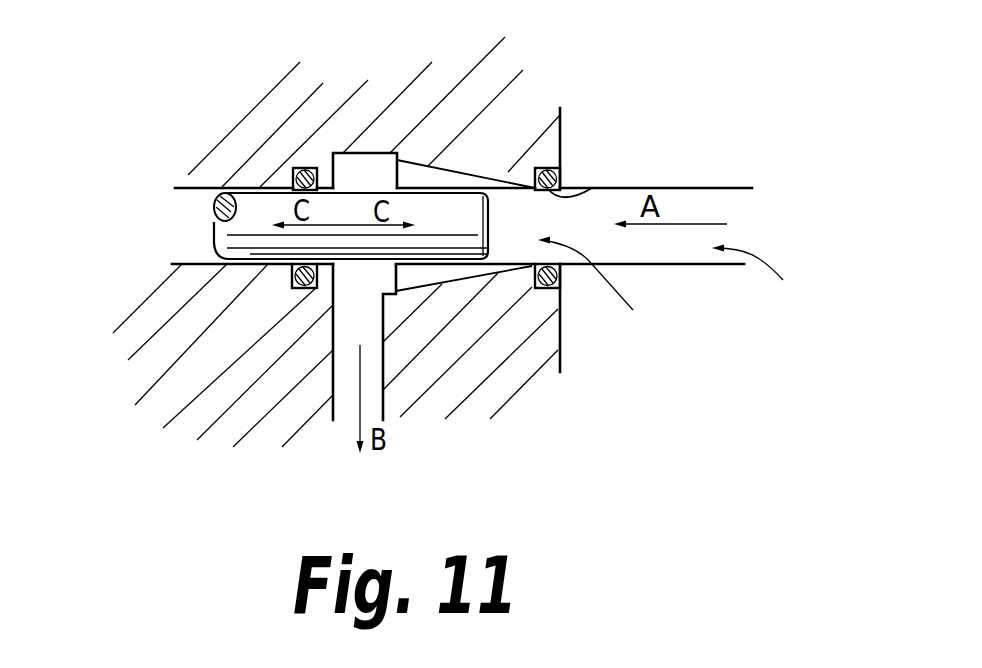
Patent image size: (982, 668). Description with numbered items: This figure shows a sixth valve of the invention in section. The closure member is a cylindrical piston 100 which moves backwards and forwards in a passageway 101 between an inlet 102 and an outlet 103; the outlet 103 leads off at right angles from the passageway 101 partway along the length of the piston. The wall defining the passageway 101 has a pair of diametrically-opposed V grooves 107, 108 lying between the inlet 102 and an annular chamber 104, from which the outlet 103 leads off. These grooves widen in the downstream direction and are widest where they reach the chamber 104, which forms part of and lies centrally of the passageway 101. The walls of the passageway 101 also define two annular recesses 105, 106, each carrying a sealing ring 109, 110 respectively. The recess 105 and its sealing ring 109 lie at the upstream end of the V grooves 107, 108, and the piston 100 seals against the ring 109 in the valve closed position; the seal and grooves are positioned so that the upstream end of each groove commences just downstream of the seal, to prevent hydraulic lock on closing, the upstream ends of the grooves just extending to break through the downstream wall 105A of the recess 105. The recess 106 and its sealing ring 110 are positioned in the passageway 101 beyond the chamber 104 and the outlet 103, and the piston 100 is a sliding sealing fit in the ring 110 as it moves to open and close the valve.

The cylindrical piston 100 is at (258, 247).
The passageway 101 is at (605, 288).
The inlet 102 is at (762, 280).
The outlet 103 is at (346, 409).
The annular chamber 104 is at (365, 167).
The annular recess 105 is at (562, 176).
The downstream wall of recess 105A is at (528, 288).
The annular recess 106 is at (290, 287).
The V groove 107 is at (440, 176).
The V groove 108 is at (425, 274).
The sealing ring 109 is at (590, 188).
The sealing ring 110 is at (294, 186).